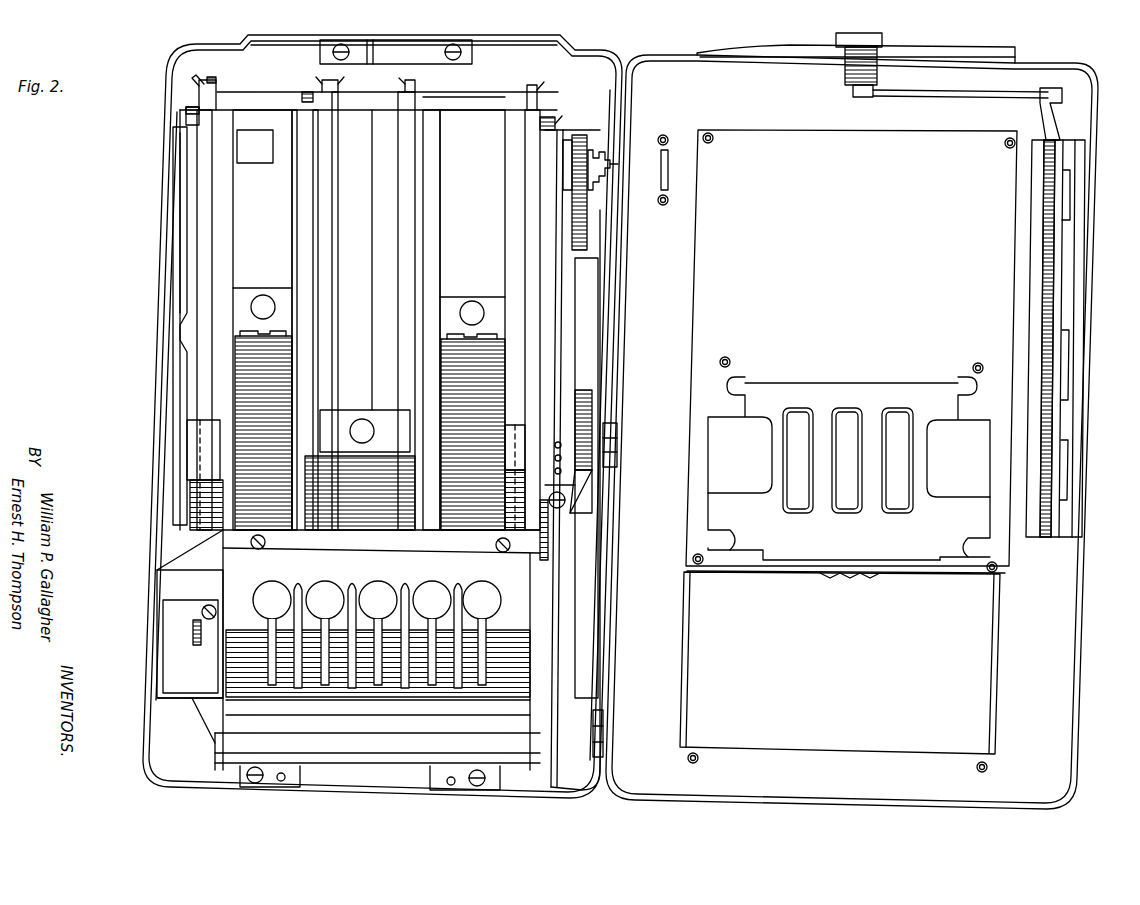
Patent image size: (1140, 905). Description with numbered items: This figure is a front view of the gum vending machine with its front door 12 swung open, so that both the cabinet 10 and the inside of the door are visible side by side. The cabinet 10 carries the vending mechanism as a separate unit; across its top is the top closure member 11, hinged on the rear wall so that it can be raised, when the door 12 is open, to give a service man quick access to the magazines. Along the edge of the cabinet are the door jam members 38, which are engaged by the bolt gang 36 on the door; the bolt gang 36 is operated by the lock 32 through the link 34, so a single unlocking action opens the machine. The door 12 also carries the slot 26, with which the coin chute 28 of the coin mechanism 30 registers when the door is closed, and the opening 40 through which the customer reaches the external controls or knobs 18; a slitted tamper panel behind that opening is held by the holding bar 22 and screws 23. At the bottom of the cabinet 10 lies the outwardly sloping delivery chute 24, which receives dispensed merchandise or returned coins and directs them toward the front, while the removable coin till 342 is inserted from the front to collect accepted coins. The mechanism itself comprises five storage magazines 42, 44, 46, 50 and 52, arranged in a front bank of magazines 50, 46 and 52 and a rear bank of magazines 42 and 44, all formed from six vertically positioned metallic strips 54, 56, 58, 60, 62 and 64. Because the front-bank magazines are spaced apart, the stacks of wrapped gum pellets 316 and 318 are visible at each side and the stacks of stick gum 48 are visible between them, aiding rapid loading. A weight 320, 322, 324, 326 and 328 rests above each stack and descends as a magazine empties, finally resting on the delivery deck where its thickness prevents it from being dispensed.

The cabinet 10 is at (190, 63).
The top closure member 11 is at (240, 43).
The front door 12 is at (1040, 72).
The external controls or knobs 18 is at (278, 585).
The holding bar 22 is at (258, 562).
The screws 23 is at (503, 553).
The delivery chute 24 is at (240, 752).
The slot 26 is at (668, 165).
The coin chute 28 is at (586, 188).
The coin mechanism 30 is at (585, 270).
The lock 32 is at (882, 42).
The link 34 is at (950, 96).
The bolt gang 36 is at (1078, 203).
The door jam members 38 is at (180, 253).
The opening 40 is at (975, 590).
The magazine 42 is at (256, 115).
The magazine 44 is at (470, 125).
The magazine 46 is at (348, 120).
The stack of stick gum 48 is at (440, 346).
The magazine 50 is at (222, 128).
The magazine 52 is at (522, 96).
The metallic strip 54 is at (192, 118).
The metallic strip 56 is at (207, 95).
The metallic strip 58 is at (318, 93).
The metallic strip 60 is at (425, 95).
The metallic strip 62 is at (538, 88).
The metallic strip 64 is at (552, 120).
The gum pellets 316 is at (196, 489).
The gum pellets 318 is at (505, 492).
The weight 320 is at (255, 300).
The weight 322 is at (459, 305).
The weight 324 is at (212, 462).
The weight 326 is at (350, 418).
The weight 328 is at (505, 450).
The coin till 342 is at (582, 636).